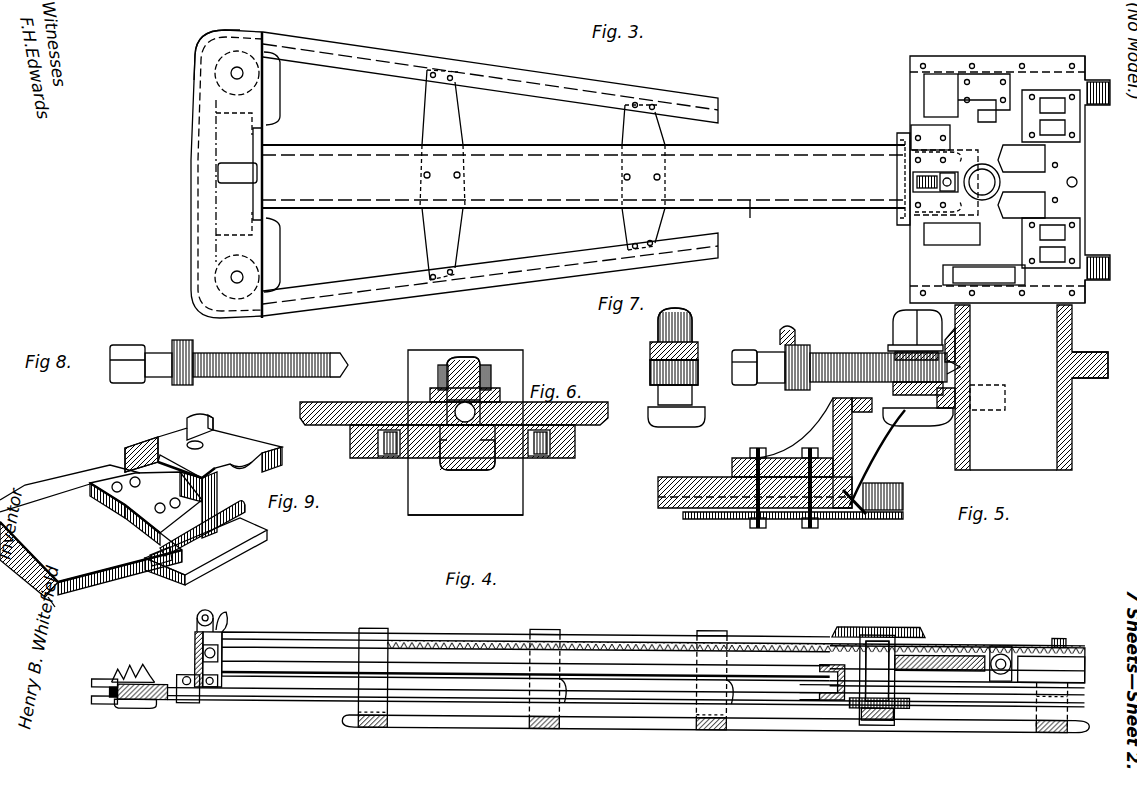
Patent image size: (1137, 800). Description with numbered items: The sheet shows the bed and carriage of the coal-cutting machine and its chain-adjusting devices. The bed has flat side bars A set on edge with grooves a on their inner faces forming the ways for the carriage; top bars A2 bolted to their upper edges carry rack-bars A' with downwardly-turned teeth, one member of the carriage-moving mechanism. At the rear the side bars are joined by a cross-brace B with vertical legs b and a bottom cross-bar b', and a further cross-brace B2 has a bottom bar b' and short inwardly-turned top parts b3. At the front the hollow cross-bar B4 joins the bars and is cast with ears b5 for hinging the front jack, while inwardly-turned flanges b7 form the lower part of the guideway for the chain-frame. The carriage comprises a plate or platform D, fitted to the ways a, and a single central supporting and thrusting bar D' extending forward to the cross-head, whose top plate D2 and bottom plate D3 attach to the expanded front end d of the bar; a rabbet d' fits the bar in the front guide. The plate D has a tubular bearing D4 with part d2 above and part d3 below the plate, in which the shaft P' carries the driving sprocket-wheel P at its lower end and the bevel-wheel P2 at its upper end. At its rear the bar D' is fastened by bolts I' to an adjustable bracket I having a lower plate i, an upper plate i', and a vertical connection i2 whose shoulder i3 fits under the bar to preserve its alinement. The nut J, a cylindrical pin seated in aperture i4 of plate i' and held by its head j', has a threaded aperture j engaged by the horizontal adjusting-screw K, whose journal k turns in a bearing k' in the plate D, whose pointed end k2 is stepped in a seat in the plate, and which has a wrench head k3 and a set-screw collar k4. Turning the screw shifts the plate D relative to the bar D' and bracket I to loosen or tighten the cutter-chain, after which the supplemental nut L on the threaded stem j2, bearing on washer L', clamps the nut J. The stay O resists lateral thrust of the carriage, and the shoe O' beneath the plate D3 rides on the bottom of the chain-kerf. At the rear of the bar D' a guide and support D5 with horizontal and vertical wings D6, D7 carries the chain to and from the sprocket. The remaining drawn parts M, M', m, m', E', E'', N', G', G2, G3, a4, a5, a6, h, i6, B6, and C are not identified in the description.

In FIG. 3, the carriage plate or platform D is at (995, 179).
In FIG. 6, the carriage plate or platform D is at (454, 401).
In FIG. 5, the carriage plate or platform D is at (1090, 354).
In FIG. 4, the carriage plate or platform D is at (1011, 677).
In FIG. 3, the central supporting and thrusting bar D' is at (583, 176).
In FIG. 9, the central supporting and thrusting bar D' is at (91, 531).
In FIG. 5, the central supporting and thrusting bar D' is at (793, 532).
In FIG. 4, the central supporting and thrusting bar D' is at (628, 714).
In FIG. 3, the top plate of the cross-head D2 is at (206, 228).
In FIG. 4, the top plate of the cross-head D2 is at (105, 681).
In FIG. 4, the bottom plate of the cross-head D3 is at (105, 706).
In FIG. 3, the tubular bearing D4 is at (982, 182).
In FIG. 6, the tubular bearing D4 is at (530, 470).
In FIG. 5, the tubular bearing D4 is at (1031, 387).
In FIG. 4, the tubular bearing D4 is at (900, 640).
In FIG. 9, the guide and support D5 is at (248, 540).
In FIG. 9, the horizontal wing or plate D6 is at (225, 568).
In FIG. 9, the vertical wing or plate D7 is at (150, 570).
In FIG. 3, the slot block M is at (206, 172).
In FIG. 3, the frame corner M' is at (199, 55).
In FIG. 3, the inner outline m is at (210, 174).
In FIG. 3, the notch wall m' is at (277, 174).
In FIG. 3, the pivot pin E' is at (237, 73).
In FIG. 3, the pivot pin E'' is at (237, 276).
In FIG. 3, the curved brace N' is at (287, 172).
In FIG. 3, the expanded front end d is at (265, 174).
In FIG. 3, the rabbet d' is at (749, 220).
In FIG. 9, the rabbet d' is at (51, 610).
In FIG. 5, the rabbet d' is at (784, 500).
In FIG. 4, the rabbet d' is at (448, 730).
In FIG. 6, the upper part of tubular bearing d2 is at (477, 419).
In FIG. 5, the upper part of tubular bearing d2 is at (1073, 322).
In FIG. 6, the lower part of tubular bearing d3 is at (510, 512).
In FIG. 5, the lower part of tubular bearing d3 is at (1073, 452).
In FIG. 3, the side rail G' is at (490, 174).
In FIG. 3, the cross brace G2 is at (455, 126).
In FIG. 3, the cross brace G3 is at (635, 133).
In FIG. 4, the grooves or channels a is at (295, 655).
In FIG. 3, the boss a4 is at (1098, 108).
In FIG. 3, the plate edge a5 is at (1100, 292).
In FIG. 3, the bracket a6 is at (915, 185).
In FIG. 8, the adjusting-screw K is at (300, 336).
In FIG. 5, the adjusting-screw K is at (838, 352).
In FIG. 8, the journal part k is at (158, 380).
In FIG. 5, the journal part k is at (771, 381).
In FIG. 5, the bearing k' is at (799, 317).
In FIG. 8, the pointed end k2 is at (342, 352).
In FIG. 5, the pointed end k2 is at (963, 366).
In FIG. 8, the head of adjusting-screw k3 is at (128, 345).
In FIG. 5, the head of adjusting-screw k3 is at (744, 350).
In FIG. 8, the collar k4 is at (188, 385).
In FIG. 5, the collar k4 is at (800, 390).
In FIG. 9, the adjustable bracket I is at (197, 476).
In FIG. 5, the adjustable bracket I is at (778, 482).
In FIG. 9, the bolts I' is at (126, 500).
In FIG. 5, the bolts I' is at (857, 481).
In FIG. 9, the lower plate of bracket i is at (141, 506).
In FIG. 5, the lower plate of bracket i is at (782, 455).
In FIG. 4, the lower plate of bracket i is at (1041, 707).
In FIG. 9, the upper plate of bracket i' is at (256, 471).
In FIG. 6, the upper plate of bracket i' is at (470, 456).
In FIG. 9, the vertical connection i2 is at (135, 462).
In FIG. 5, the vertical connection i2 is at (862, 430).
In FIG. 5, the shoulder i3 is at (860, 512).
In FIG. 9, the aperture i4 is at (203, 445).
In FIG. 5, the aperture i4 is at (903, 394).
In FIG. 4, the teeth i6 is at (195, 672).
In FIG. 6, the nut J is at (450, 465).
In FIG. 7, the nut J is at (678, 356).
In FIG. 5, the nut J is at (920, 428).
In FIG. 6, the threaded aperture j is at (463, 452).
In FIG. 7, the threaded aperture j is at (680, 372).
In FIG. 6, the head of nut j' is at (471, 467).
In FIG. 7, the head of nut j' is at (676, 426).
In FIG. 6, the threaded stem j2 is at (460, 357).
In FIG. 7, the threaded stem j2 is at (690, 312).
In FIG. 6, the supplemental nut L is at (488, 351).
In FIG. 5, the supplemental nut L is at (908, 314).
In FIG. 4, the supplemental nut L is at (821, 693).
In FIG. 6, the washer L' is at (433, 353).
In FIG. 5, the washer L' is at (946, 334).
In FIG. 5, the hidden slot h is at (975, 382).
In FIG. 4, the side bars A is at (526, 642).
In FIG. 4, the rack-bars A' is at (925, 652).
In FIG. 4, the top bars A2 is at (640, 633).
In FIG. 4, the cross-brace B is at (562, 685).
In FIG. 4, the cross-brace B2 is at (374, 664).
In FIG. 4, the front cross-bar B4 is at (212, 625).
In FIG. 4, the end bracket B6 is at (215, 680).
In FIG. 4, the vertical legs b is at (659, 723).
In FIG. 4, the bottom cross-bar b' is at (881, 742).
In FIG. 4, the inwardly-turned ends b3 is at (628, 617).
In FIG. 4, the ears b5 is at (198, 620).
In FIG. 4, the inwardly-turned lips or flanges b7 is at (185, 704).
In FIG. 4, the stay device O is at (133, 663).
In FIG. 4, the shoe O' is at (140, 710).
In FIG. 4, the sprocket-wheel P is at (888, 680).
In FIG. 4, the sprocket shaft P' is at (894, 648).
In FIG. 4, the bevel-wheel P2 is at (850, 622).
In FIG. 4, the lever C is at (822, 722).